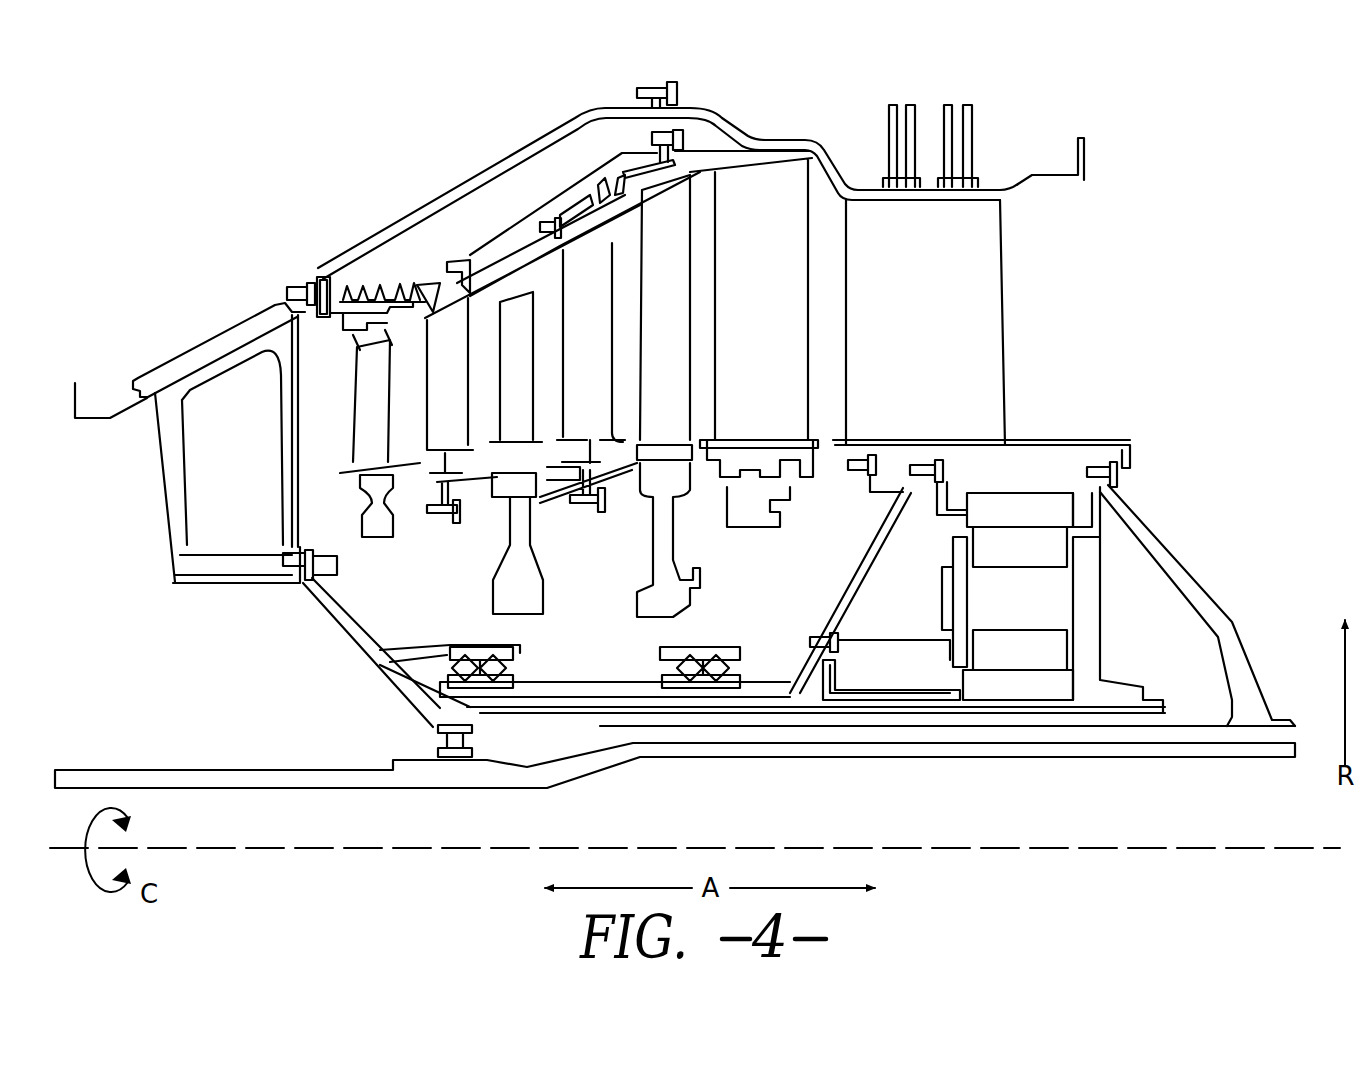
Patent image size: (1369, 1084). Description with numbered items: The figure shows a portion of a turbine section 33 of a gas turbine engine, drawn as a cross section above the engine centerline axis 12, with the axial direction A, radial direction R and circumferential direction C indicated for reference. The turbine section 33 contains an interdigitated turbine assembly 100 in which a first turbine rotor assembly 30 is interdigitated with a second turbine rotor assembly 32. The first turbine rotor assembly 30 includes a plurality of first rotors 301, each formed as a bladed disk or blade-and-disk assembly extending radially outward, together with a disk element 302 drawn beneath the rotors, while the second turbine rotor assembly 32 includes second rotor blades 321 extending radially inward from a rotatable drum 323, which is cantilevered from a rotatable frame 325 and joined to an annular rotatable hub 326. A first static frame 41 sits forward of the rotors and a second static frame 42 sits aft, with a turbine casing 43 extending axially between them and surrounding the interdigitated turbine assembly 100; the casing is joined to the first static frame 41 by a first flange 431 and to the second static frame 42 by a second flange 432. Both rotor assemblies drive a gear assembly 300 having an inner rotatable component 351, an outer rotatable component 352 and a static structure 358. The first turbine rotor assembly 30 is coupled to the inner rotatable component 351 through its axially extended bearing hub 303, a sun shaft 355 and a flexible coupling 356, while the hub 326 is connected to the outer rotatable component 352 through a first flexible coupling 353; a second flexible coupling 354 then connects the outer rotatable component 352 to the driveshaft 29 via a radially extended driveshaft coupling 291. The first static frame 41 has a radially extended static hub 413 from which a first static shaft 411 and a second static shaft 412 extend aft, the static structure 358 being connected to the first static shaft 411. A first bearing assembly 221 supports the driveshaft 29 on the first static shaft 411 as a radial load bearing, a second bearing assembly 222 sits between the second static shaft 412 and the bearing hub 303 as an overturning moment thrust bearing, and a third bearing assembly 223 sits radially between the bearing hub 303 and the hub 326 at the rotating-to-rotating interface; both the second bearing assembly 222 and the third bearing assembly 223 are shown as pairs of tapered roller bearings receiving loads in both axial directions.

The engine centerline axis 12 is at (370, 848).
The driveshaft 29 is at (840, 760).
The first turbine rotor assembly 30 is at (345, 458).
The second turbine rotor assembly 32 is at (815, 213).
The turbine section 33 is at (748, 88).
The first static frame 41 is at (140, 490).
The second static frame 42 is at (1020, 303).
The turbine casing 43 is at (530, 150).
The interdigitated turbine assembly 100 is at (382, 210).
The first bearing assembly 221 is at (430, 742).
The second bearing assembly 222 is at (522, 670).
The third bearing assembly 223 is at (785, 693).
The driveshaft coupling 291 is at (1228, 607).
The gear assembly 300 is at (1125, 597).
The first rotor 301 is at (352, 420).
The rotor disc 302 is at (545, 618).
The bearing hub 303 is at (627, 690).
The second rotor blade 321 is at (517, 358).
The rotatable drum 323 is at (492, 212).
The rotatable frame 325 is at (754, 303).
The annular rotatable hub 326 is at (815, 592).
The inner rotatable component 351 is at (995, 685).
The outer rotatable component 352 is at (1035, 505).
The first flexible coupling 353 is at (945, 488).
The second flexible coupling 354 is at (1112, 523).
The sun shaft 355 is at (940, 697).
The flexible coupling 356 is at (858, 660).
The static structure 358 is at (1085, 607).
The first static shaft 411 is at (550, 727).
The second static shaft 412 is at (400, 638).
The static hub 413 is at (355, 655).
The first flange 431 is at (305, 272).
The second flange 432 is at (643, 76).